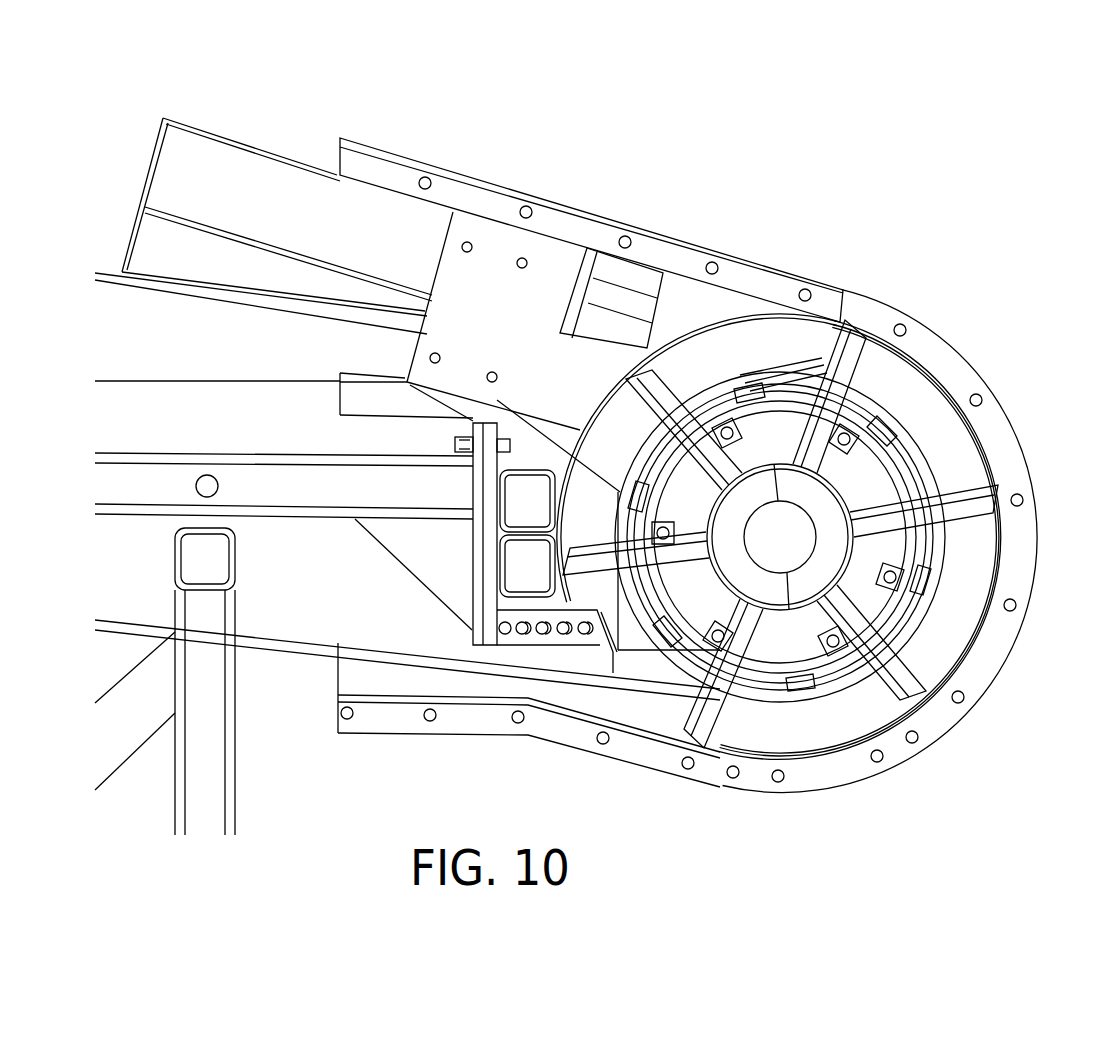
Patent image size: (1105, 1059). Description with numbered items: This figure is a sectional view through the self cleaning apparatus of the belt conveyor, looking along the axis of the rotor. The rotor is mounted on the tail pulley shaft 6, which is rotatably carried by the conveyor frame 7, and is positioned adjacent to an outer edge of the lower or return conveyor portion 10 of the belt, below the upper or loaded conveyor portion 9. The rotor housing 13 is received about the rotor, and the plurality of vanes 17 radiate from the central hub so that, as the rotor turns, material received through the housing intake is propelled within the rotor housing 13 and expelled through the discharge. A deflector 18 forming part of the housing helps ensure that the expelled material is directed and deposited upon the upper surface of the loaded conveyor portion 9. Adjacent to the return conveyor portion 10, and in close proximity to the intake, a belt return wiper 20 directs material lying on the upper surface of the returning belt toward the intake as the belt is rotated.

The tail pulley shaft 6 is at (788, 543).
The conveyor frame 7 is at (213, 827).
The loaded conveyor portion 9 is at (108, 280).
The return conveyor portion 10 is at (293, 644).
The rotor housing 13 is at (998, 432).
The vanes 17 is at (862, 350).
The deflector 18 is at (262, 173).
The belt return wiper 20 is at (578, 650).